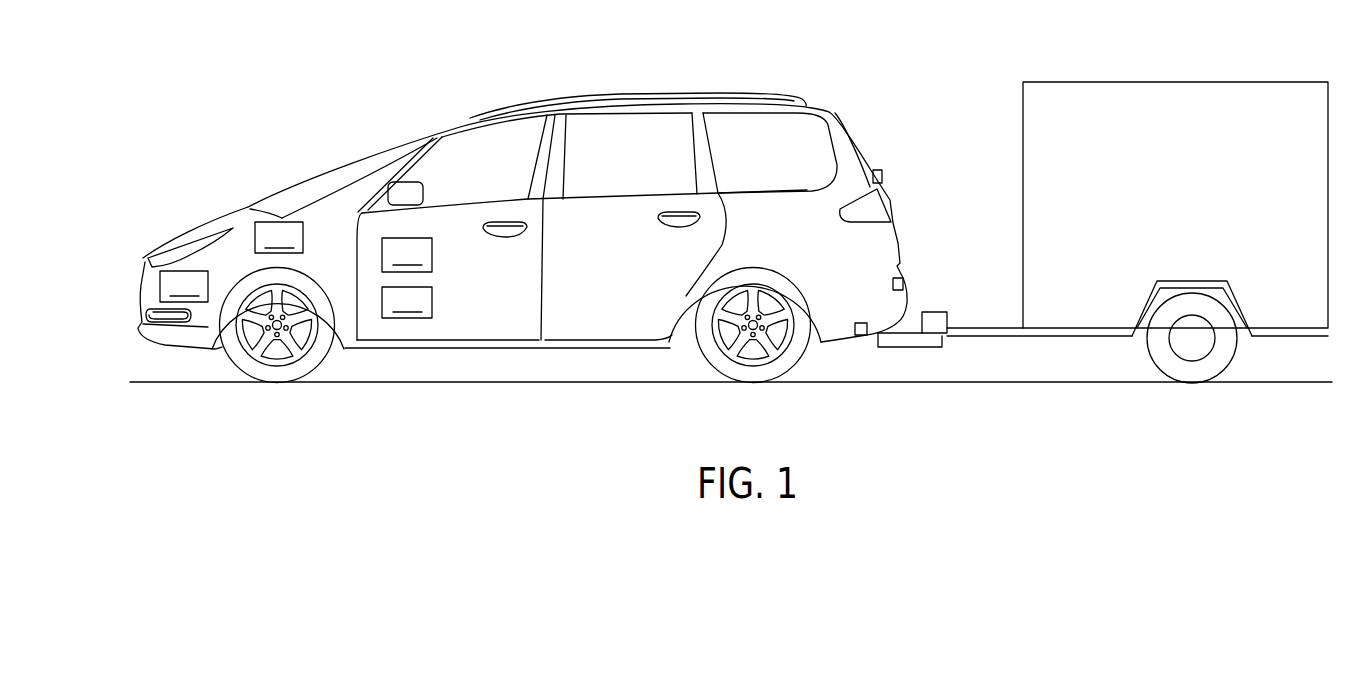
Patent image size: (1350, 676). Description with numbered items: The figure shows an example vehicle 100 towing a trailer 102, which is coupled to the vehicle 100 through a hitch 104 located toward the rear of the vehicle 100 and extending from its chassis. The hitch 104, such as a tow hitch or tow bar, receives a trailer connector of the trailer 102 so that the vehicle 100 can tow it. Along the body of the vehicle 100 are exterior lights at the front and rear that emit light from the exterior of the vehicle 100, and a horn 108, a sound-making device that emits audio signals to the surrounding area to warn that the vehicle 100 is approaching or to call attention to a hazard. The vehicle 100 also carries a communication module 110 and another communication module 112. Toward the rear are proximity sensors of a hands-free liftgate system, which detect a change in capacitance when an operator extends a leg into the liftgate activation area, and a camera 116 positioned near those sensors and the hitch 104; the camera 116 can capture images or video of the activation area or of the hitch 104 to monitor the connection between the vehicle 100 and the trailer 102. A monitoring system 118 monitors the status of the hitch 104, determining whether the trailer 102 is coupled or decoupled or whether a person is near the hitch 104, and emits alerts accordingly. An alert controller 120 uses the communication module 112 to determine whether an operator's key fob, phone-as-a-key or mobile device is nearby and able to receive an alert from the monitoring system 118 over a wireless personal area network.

The vehicle 100 is at (561, 218).
The trailer 102 is at (1175, 82).
The hitch 104 is at (908, 347).
The horn 108 is at (184, 286).
The communication module 110 is at (407, 255).
The communication module 112 is at (407, 302).
The camera 116 is at (882, 177).
The monitoring system 118 is at (954, 315).
The alert controller 120 is at (279, 237).